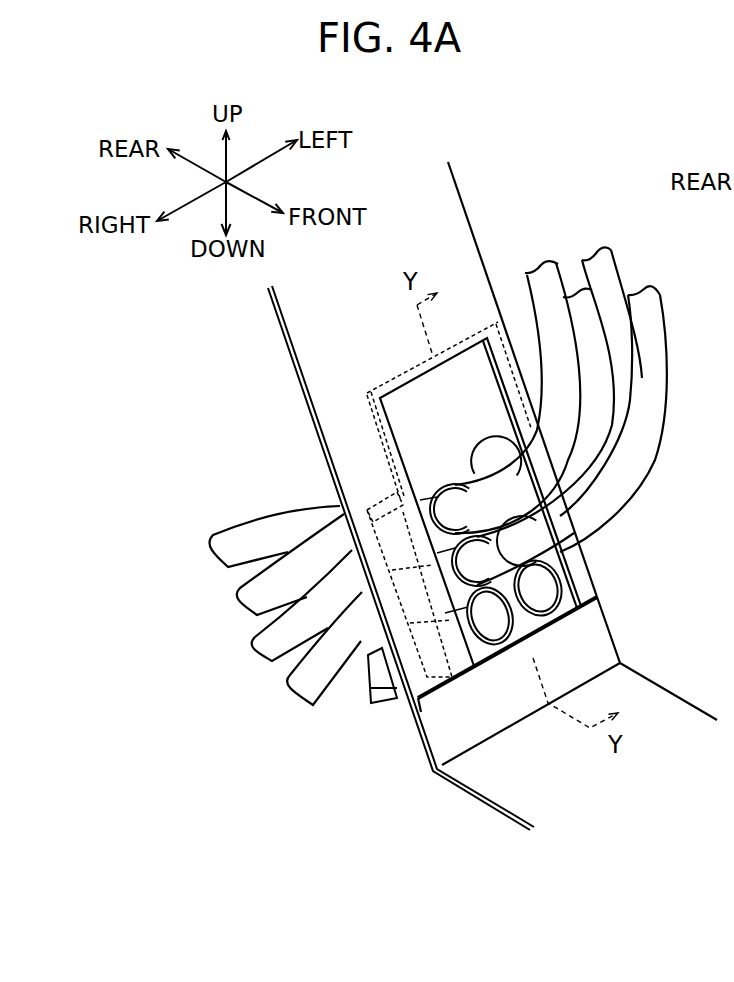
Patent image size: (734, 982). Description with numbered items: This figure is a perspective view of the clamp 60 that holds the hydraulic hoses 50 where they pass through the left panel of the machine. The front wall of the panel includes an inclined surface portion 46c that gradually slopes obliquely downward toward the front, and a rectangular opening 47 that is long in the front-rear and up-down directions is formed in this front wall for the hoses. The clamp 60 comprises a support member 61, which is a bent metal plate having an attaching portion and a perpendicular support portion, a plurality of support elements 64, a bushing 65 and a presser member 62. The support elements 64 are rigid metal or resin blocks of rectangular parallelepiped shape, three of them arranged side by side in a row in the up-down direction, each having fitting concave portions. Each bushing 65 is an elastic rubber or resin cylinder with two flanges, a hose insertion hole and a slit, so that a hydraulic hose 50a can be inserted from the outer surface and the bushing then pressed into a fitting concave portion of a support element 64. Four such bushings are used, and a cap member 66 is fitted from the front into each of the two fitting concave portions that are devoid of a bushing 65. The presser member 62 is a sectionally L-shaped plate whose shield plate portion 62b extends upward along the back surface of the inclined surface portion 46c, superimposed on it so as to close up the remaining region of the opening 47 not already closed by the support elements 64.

The inclined surface portion 46c is at (438, 192).
The opening 47 is at (395, 398).
The hydraulic hoses 50 is at (594, 392).
The hydraulic hose 50a is at (650, 320).
The clamp 60 is at (607, 533).
The support member 61 is at (395, 700).
The presser member 62 is at (385, 455).
The shield plate portion 62b is at (413, 426).
The support elements 64 is at (473, 648).
The bushing 65 is at (450, 482).
The cap member 66 is at (497, 615).